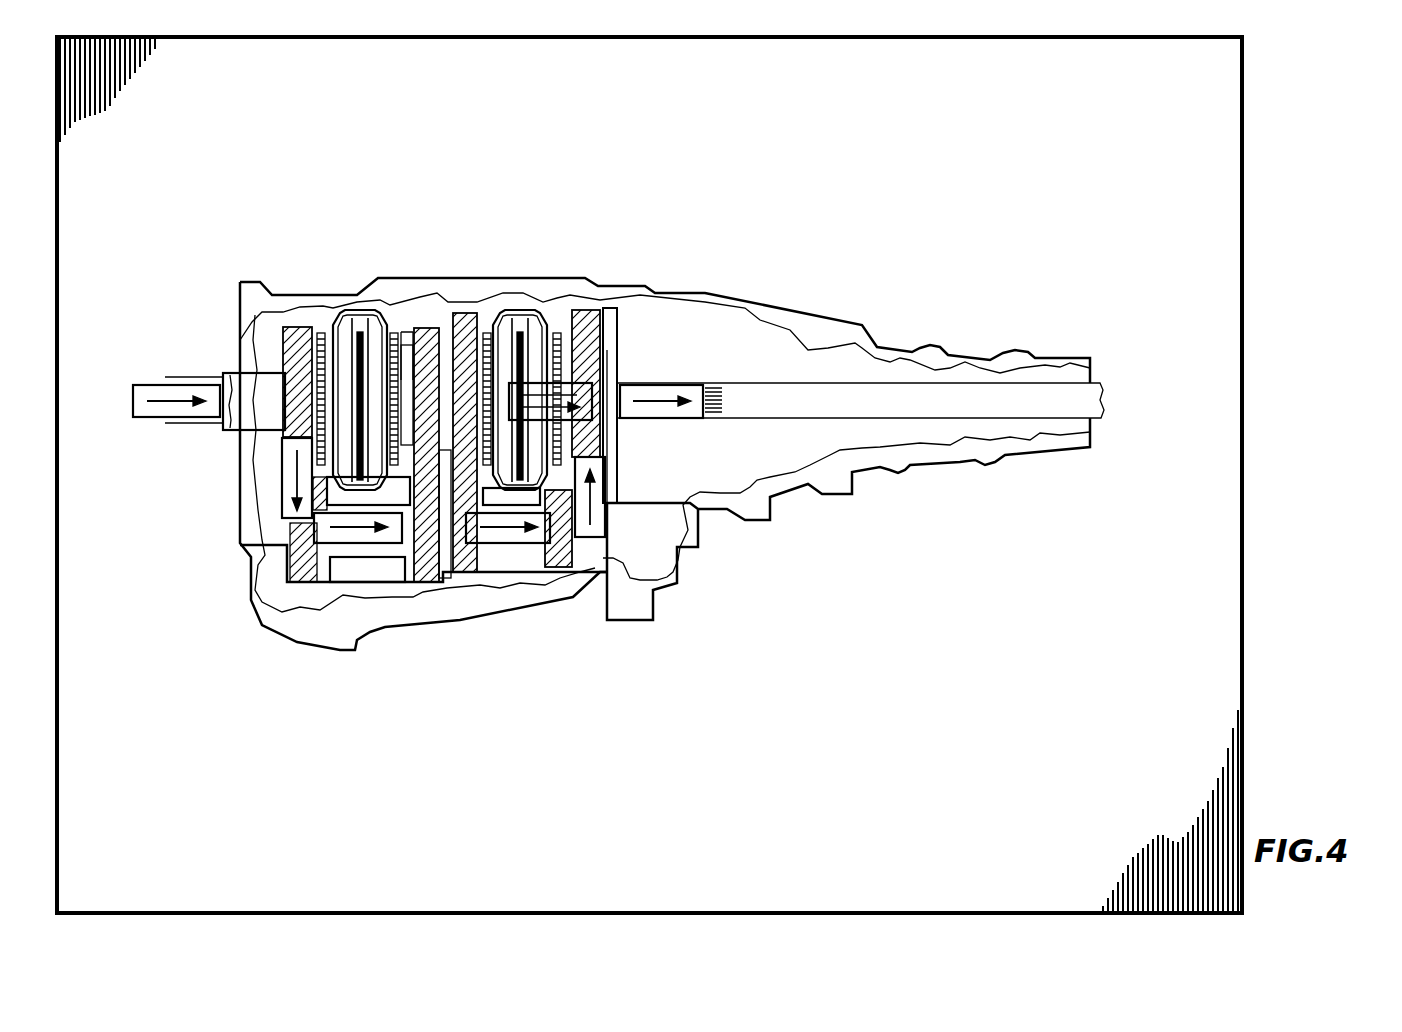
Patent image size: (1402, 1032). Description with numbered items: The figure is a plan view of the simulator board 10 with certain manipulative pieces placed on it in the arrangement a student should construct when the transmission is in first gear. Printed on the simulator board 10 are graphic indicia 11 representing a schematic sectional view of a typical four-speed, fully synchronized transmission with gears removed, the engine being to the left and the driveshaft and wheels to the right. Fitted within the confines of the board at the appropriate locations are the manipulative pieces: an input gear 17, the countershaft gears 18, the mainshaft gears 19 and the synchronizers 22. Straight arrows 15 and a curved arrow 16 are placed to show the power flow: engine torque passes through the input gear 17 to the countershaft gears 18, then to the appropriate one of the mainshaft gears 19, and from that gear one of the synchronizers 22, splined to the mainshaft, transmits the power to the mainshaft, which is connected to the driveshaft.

The simulator board 10 is at (1249, 132).
The graphic indicia 11 is at (879, 321).
The straight arrows 15 is at (150, 385).
The curved arrow 16 is at (588, 387).
The input gear 17 is at (281, 338).
The countershaft gears 18 is at (406, 569).
The mainshaft gears 19 is at (442, 325).
The synchronizers 22 is at (355, 312).